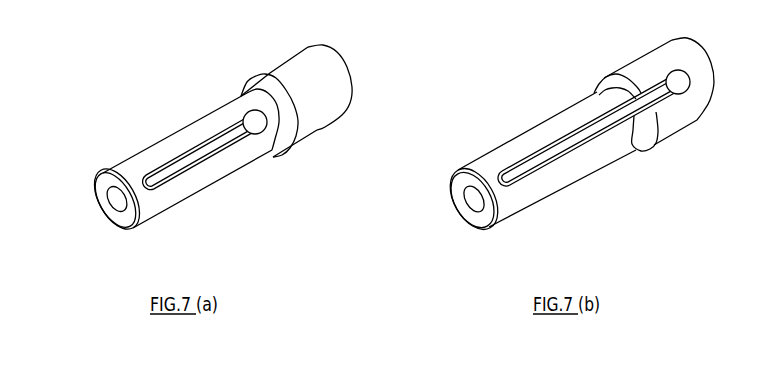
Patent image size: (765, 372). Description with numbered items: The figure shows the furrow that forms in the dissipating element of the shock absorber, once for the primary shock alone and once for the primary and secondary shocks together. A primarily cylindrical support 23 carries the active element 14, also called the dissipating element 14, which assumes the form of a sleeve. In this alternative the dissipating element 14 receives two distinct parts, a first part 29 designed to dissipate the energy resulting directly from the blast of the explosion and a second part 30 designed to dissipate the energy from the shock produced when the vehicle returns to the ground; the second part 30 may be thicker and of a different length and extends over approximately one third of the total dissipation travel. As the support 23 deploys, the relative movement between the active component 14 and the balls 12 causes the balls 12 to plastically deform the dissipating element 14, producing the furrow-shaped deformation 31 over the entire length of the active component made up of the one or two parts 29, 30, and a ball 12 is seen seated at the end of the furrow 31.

In FIG. 7A, the balls 12 is at (252, 118).
In FIG. 7B, the balls 12 is at (678, 82).
In FIG. 7A, the dissipating element 14 is at (277, 171).
In FIG. 7A, the support 23 is at (108, 175).
In FIG. 7A, the first part 29 is at (203, 182).
In FIG. 7A, the second part 30 is at (303, 125).
In FIG. 7A, the furrow-shaped deformation 31 is at (188, 158).
In FIG. 7B, the furrow-shaped deformation 31 is at (563, 143).